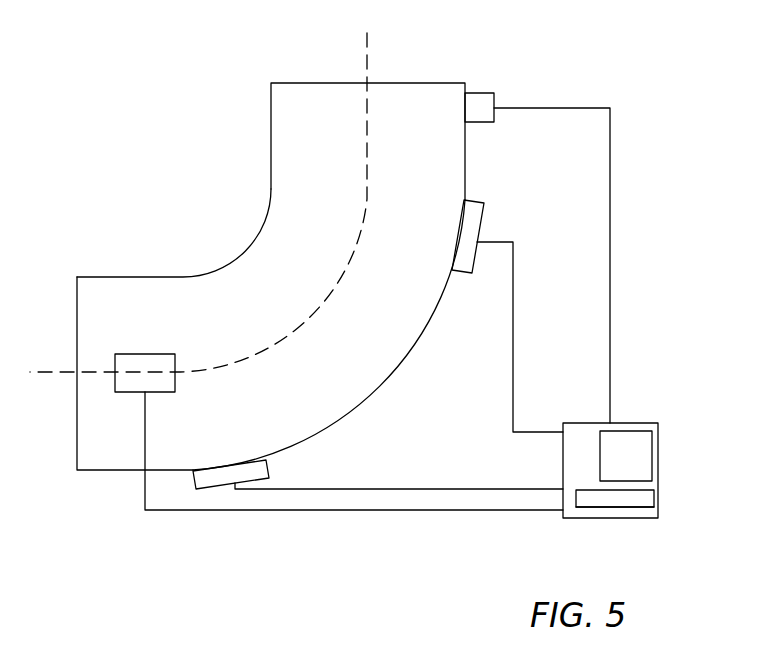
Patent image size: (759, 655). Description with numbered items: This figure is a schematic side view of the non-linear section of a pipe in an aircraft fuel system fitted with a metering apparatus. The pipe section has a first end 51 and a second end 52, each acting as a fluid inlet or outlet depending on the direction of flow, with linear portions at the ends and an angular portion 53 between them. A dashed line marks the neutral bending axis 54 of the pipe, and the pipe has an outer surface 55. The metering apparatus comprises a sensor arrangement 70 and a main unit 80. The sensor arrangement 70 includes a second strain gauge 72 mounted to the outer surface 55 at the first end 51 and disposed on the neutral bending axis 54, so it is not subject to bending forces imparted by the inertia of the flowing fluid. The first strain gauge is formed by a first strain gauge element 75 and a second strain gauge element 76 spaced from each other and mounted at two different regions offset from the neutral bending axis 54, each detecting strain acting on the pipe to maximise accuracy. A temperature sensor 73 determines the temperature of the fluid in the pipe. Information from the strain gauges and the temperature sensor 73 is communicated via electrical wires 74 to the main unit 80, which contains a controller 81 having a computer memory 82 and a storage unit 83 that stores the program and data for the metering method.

The first end 51 is at (75, 442).
The second end 52 is at (405, 85).
The angular portion 53 is at (410, 352).
The neutral bending axis 54 is at (367, 62).
The outer surface 55 is at (122, 277).
The sensor arrangement 70 is at (637, 329).
The second strain gauge 72 is at (138, 354).
The temperature sensor 73 is at (494, 100).
The electrical wires 74 is at (610, 157).
The first strain gauge element 75 is at (452, 257).
The second strain gauge element 76 is at (245, 460).
The main unit 80 is at (660, 415).
The controller 81 is at (652, 433).
The computer memory 82 is at (658, 499).
The storage unit 83 is at (598, 507).